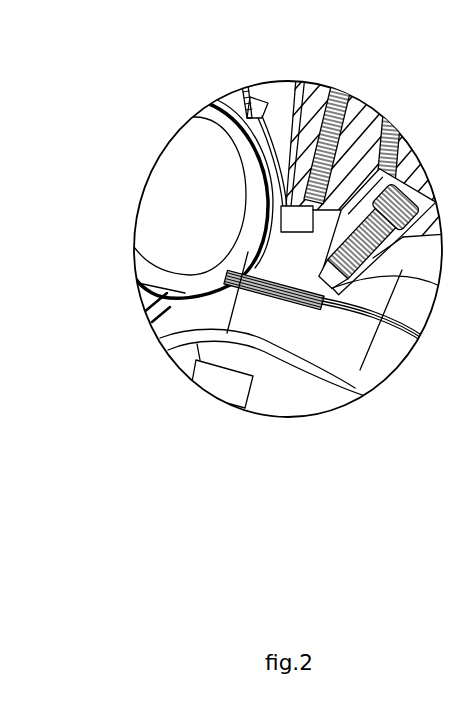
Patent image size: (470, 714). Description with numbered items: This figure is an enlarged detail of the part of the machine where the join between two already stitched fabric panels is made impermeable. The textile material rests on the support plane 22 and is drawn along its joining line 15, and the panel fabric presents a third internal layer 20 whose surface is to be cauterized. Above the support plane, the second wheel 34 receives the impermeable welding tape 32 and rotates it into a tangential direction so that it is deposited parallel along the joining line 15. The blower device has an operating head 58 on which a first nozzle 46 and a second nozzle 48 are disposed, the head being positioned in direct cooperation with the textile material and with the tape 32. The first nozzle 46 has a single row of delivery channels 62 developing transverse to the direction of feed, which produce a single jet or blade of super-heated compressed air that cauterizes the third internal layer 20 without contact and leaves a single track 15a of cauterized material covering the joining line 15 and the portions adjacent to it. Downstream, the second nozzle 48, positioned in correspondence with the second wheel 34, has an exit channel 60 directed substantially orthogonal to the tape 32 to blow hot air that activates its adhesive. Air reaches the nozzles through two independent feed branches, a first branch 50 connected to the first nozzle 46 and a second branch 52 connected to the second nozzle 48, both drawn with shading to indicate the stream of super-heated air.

The joining line 15 is at (418, 338).
The single track of cauterized material 15a is at (278, 302).
The third internal layer 20 is at (425, 300).
The support plane 22 is at (337, 402).
The impermeable welding tape 32 is at (248, 90).
The second wheel 34 is at (165, 172).
The first blower nozzle 46 is at (423, 234).
The second blower nozzle 48 is at (287, 228).
The first branch 50 is at (386, 156).
The second branch 52 is at (334, 88).
The operating head 58 is at (364, 117).
The exit channel 60 is at (297, 80).
The delivery channels 62 is at (335, 283).